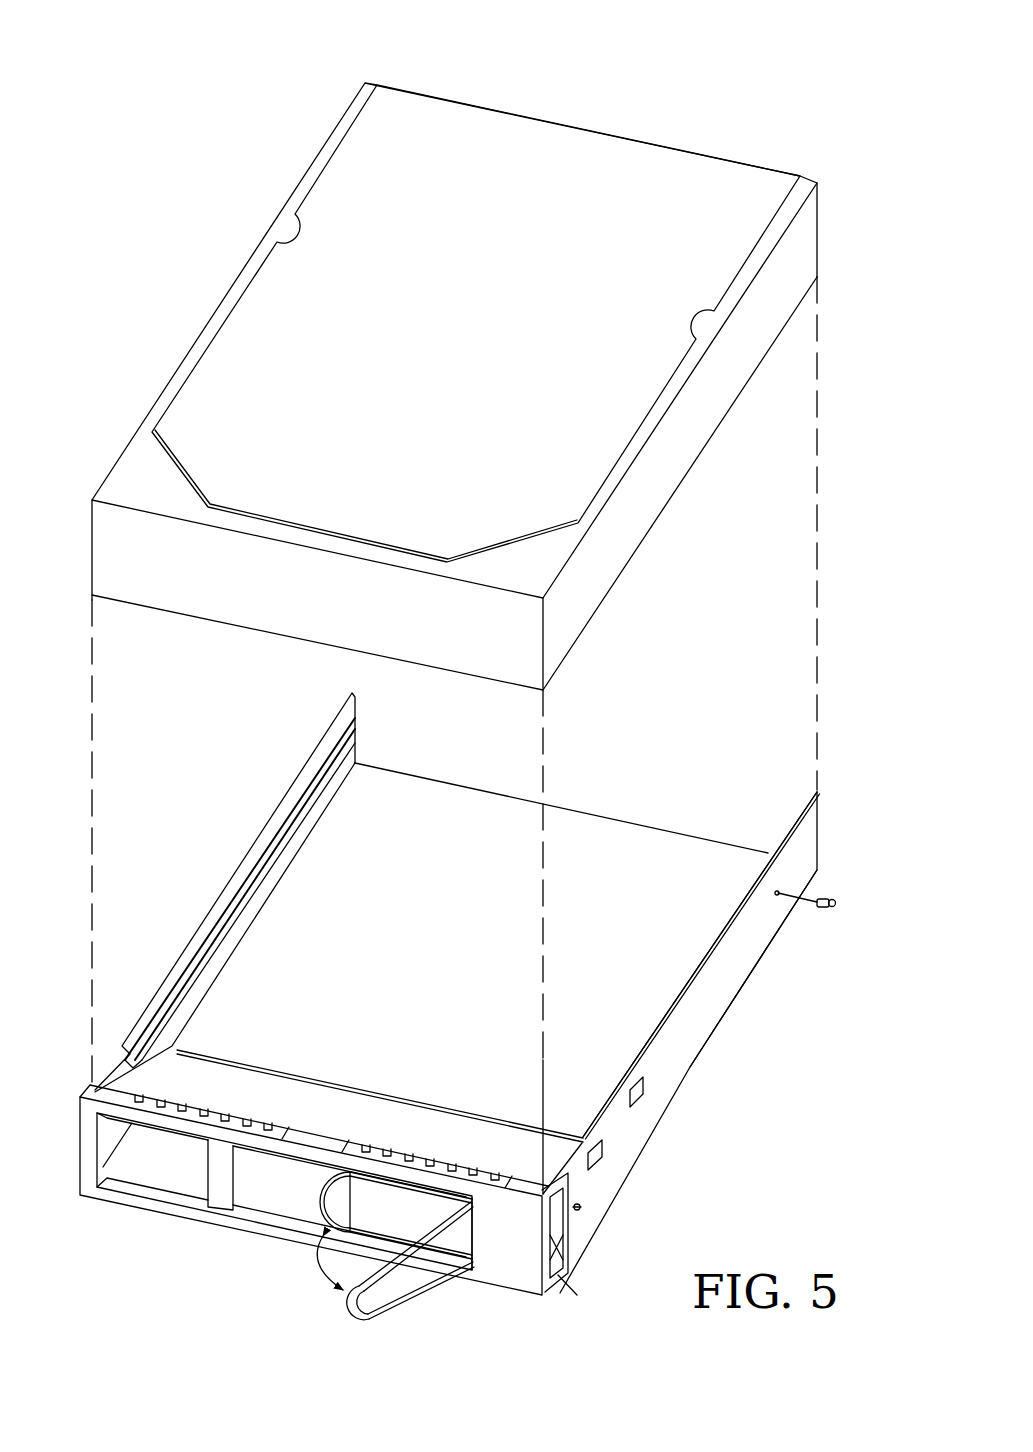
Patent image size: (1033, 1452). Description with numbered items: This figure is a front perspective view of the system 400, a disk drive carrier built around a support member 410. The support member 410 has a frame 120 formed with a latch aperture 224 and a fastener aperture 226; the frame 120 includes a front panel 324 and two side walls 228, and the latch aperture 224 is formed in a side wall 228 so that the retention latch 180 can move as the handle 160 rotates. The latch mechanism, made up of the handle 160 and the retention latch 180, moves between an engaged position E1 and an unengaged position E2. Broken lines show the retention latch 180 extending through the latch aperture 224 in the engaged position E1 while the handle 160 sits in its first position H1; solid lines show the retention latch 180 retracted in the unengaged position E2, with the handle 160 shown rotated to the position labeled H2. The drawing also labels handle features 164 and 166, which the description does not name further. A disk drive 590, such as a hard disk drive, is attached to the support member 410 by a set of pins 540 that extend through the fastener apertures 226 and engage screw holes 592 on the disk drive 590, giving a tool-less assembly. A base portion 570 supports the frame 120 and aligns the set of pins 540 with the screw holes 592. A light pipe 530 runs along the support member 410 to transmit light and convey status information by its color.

The system 400 is at (173, 228).
The disk drive 590 is at (466, 371).
The screw holes 592 is at (778, 294).
The base portion 570 is at (461, 958).
The light pipe 530 is at (262, 878).
The side wall 228 is at (185, 947).
The fastener aperture 226 is at (779, 894).
The set of pins 540 is at (835, 908).
The frame 120 is at (728, 999).
The support member 410 is at (694, 1045).
The front panel 324 is at (518, 1294).
The handle 160 is at (414, 1321).
The handle arm 164 is at (473, 1272).
The handle grip 166 is at (355, 1302).
The retention latch 180 is at (551, 1220).
The latch aperture 224 is at (574, 1250).
The engaged position E1 is at (540, 1235).
The unengaged position E2 is at (553, 1254).
The first position H1 is at (306, 1196).
The second handle position H2 is at (352, 1328).